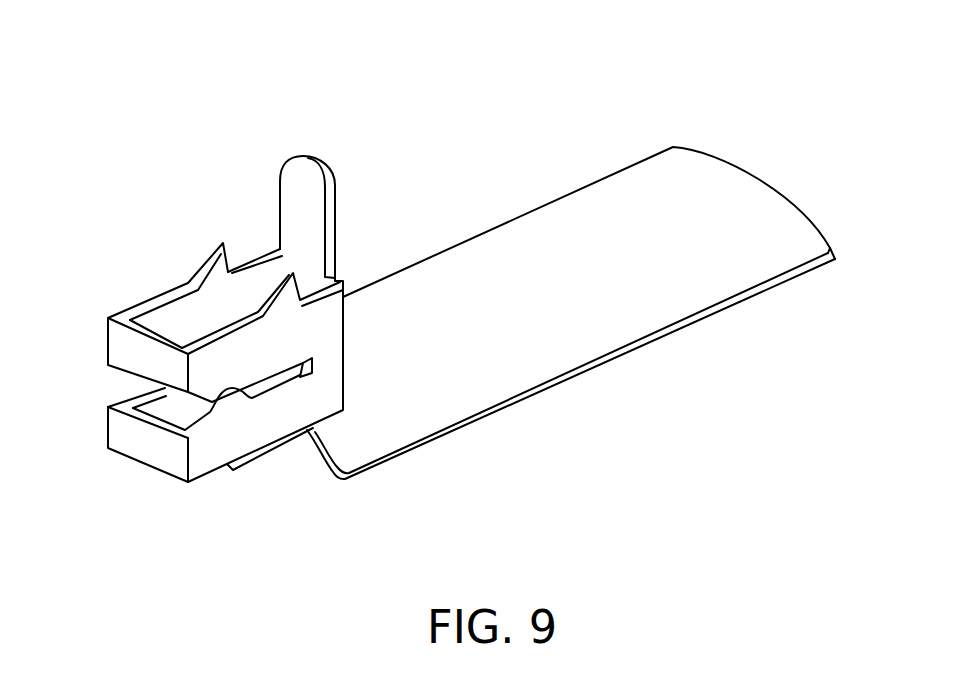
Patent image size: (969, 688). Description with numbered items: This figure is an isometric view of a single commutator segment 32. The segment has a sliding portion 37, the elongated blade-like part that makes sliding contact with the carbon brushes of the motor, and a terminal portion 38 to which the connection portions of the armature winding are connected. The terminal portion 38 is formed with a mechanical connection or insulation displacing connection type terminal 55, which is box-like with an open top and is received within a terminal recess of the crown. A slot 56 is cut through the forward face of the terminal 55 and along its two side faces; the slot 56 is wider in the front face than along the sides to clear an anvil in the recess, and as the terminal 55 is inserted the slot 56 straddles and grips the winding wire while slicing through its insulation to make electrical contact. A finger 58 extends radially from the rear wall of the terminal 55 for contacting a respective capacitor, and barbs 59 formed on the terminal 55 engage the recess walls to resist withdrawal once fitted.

The commutator segment 32 is at (765, 103).
The sliding portion 37 is at (662, 302).
The terminal portion 38 is at (270, 455).
The insulation displacing connection type terminal 55 is at (162, 297).
The slot 56 is at (138, 390).
The finger 58 is at (300, 190).
The barb 59 is at (215, 255).